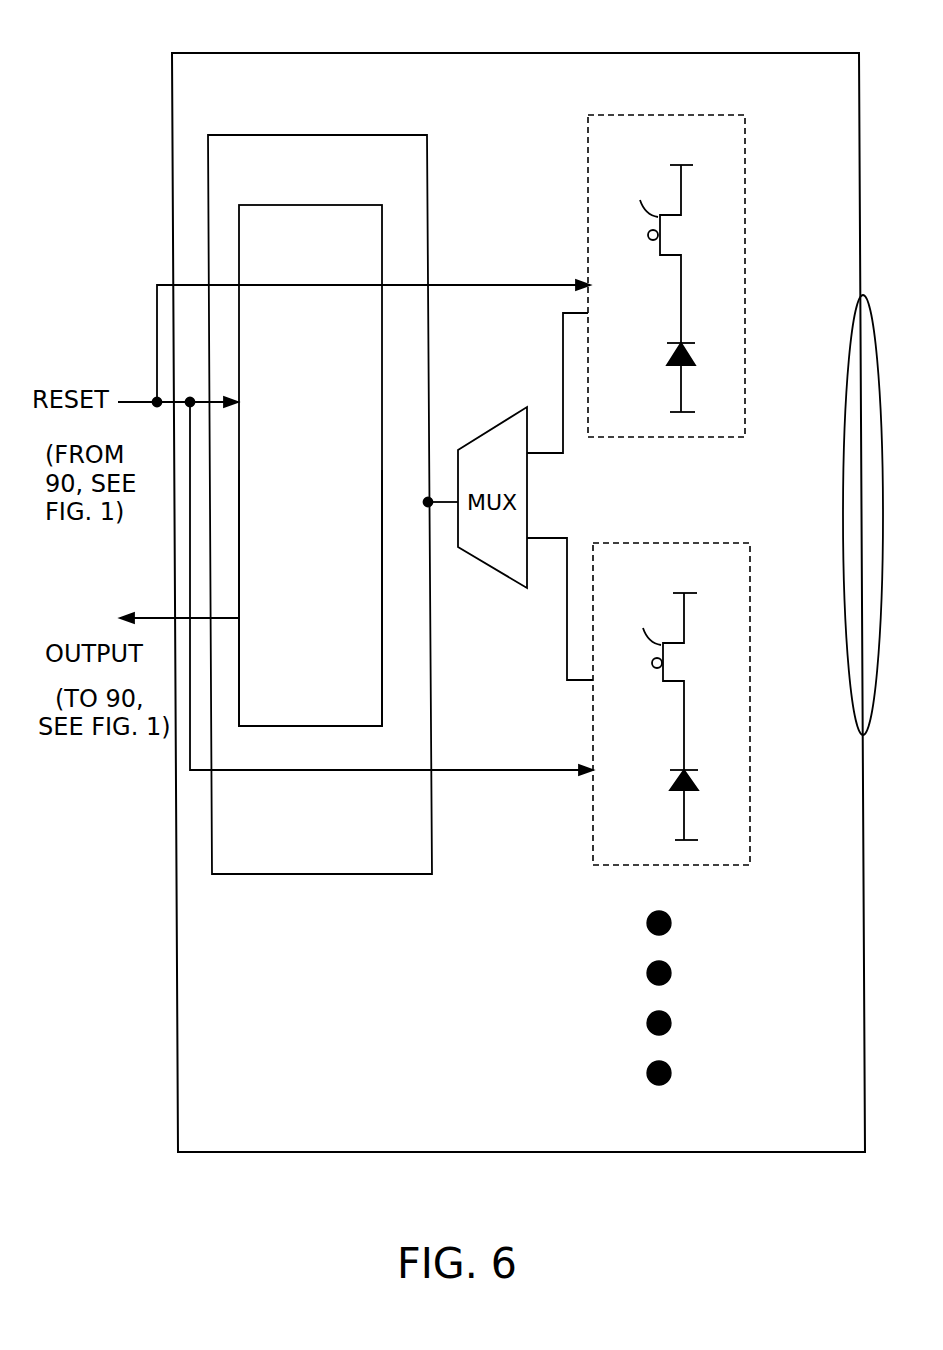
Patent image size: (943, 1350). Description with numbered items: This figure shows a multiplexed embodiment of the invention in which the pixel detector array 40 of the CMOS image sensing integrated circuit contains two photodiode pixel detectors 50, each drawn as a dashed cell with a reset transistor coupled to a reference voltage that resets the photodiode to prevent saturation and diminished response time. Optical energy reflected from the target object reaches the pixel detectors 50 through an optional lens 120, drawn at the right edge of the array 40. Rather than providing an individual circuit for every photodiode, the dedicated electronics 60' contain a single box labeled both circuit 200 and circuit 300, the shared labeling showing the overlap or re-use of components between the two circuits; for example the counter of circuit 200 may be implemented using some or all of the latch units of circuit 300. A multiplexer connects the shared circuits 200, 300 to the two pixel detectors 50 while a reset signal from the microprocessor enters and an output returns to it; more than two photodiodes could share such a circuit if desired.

The array 40 is at (610, 50).
The dedicated electronics 60' is at (320, 480).
The circuit 200 is at (332, 268).
The circuit 300 is at (332, 695).
The pixel detector 50 is at (670, 122).
The lens 120 is at (853, 722).